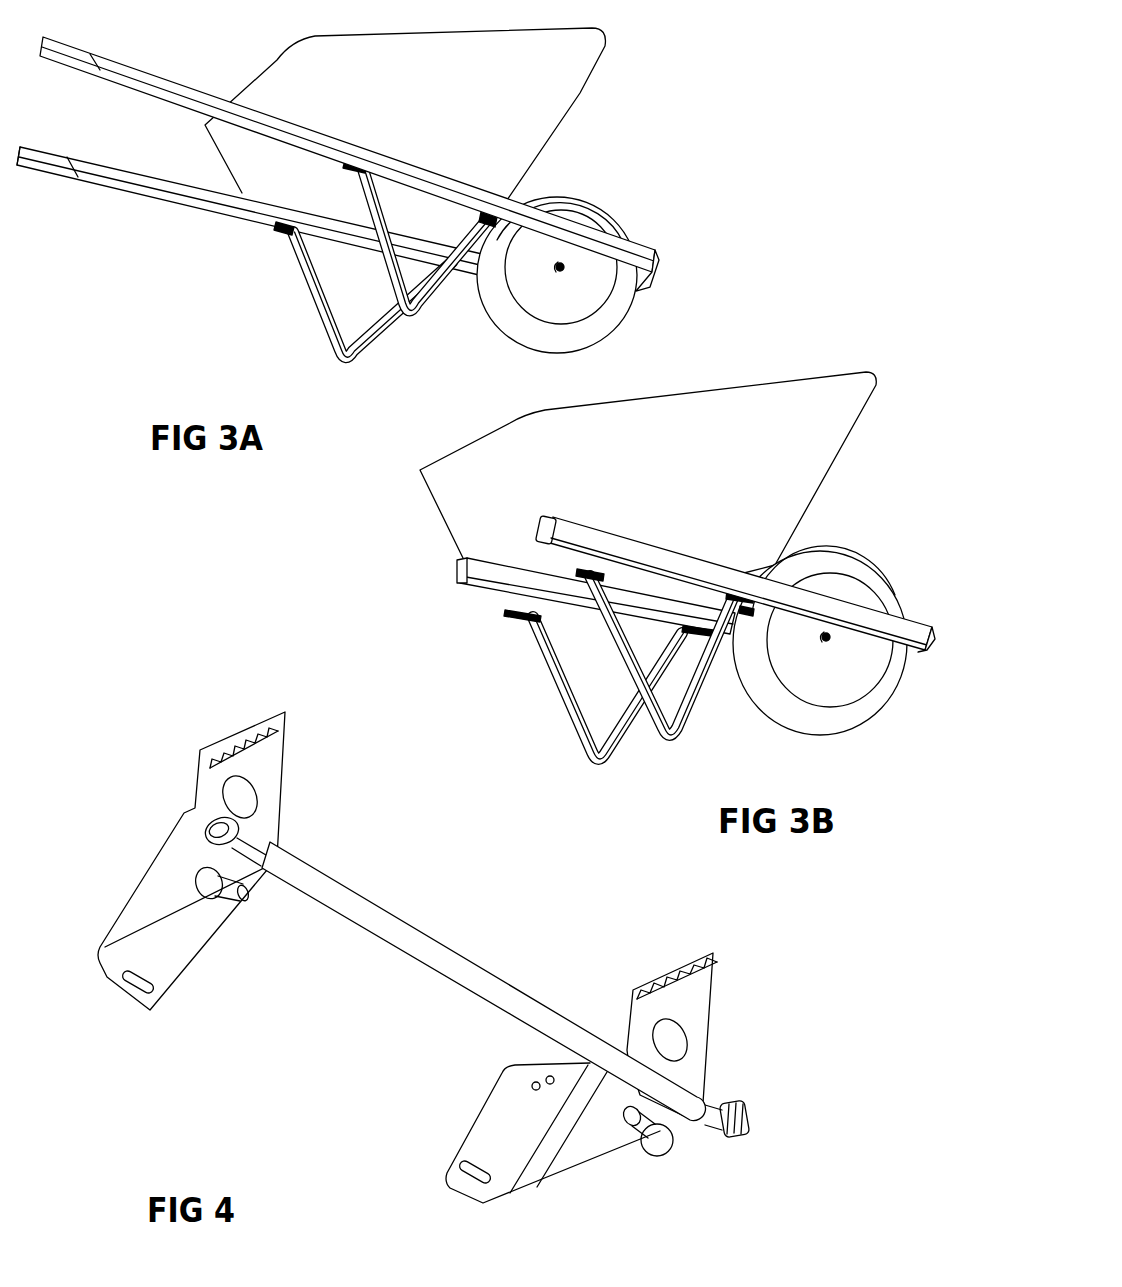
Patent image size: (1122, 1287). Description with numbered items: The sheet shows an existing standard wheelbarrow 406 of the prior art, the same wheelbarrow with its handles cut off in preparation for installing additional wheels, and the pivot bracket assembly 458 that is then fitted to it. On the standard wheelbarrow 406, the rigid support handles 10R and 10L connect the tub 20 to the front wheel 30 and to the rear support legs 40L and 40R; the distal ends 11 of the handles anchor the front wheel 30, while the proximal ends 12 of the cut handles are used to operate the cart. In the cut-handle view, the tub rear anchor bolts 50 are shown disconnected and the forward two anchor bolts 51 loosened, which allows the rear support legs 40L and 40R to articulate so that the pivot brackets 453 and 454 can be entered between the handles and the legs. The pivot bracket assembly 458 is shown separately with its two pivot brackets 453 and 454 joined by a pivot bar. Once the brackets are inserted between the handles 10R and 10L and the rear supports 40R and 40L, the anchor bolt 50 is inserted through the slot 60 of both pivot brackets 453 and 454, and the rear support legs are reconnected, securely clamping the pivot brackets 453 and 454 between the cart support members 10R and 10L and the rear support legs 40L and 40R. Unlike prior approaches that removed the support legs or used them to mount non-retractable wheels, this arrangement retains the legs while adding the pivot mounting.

In FIG. 3A, the rigid support handle 10R is at (212, 88).
In FIG. 3B, the rigid support handle 10R is at (536, 531).
In FIG. 3A, the rigid support handle 10L is at (182, 207).
In FIG. 3B, the rigid support handle 10L is at (458, 580).
In FIG. 3A, the distal ends 11 is at (660, 250).
In FIG. 3A, the proximal ends 12 is at (42, 167).
In FIG. 3A, the tub 20 is at (582, 93).
In FIG. 3B, the tub 20 is at (648, 473).
In FIG. 3A, the front wheel 30 is at (498, 325).
In FIG. 3B, the front wheel 30 is at (820, 640).
In FIG. 3A, the rear support leg 40L is at (313, 297).
In FIG. 3B, the rear support leg 40L is at (582, 750).
In FIG. 3A, the rear support leg 40R is at (380, 271).
In FIG. 3B, the rear support leg 40R is at (668, 742).
In FIG. 3A, the tub rear anchor bolts 50 is at (282, 238).
In FIG. 3B, the tub rear anchor bolts 50 is at (508, 604).
In FIG. 3B, the forward anchor bolts 51 is at (750, 614).
In FIG. 4, the slot 60 is at (481, 1158).
In FIG. 3A, the standard wheelbarrow 406 is at (150, 340).
In FIG. 4, the pivot bracket 453 is at (717, 1028).
In FIG. 4, the pivot bracket 454 is at (290, 772).
In FIG. 4, the pivot bracket assembly 458 is at (393, 1077).